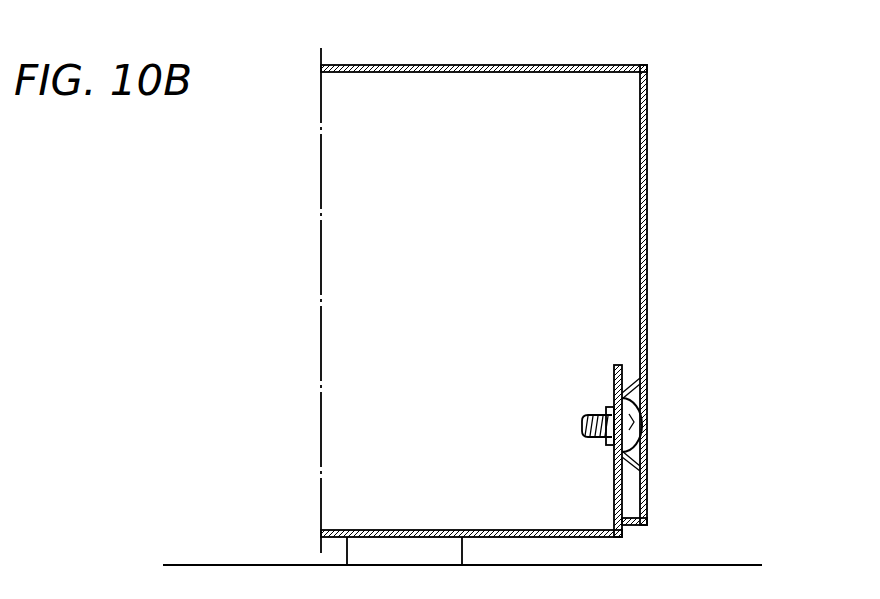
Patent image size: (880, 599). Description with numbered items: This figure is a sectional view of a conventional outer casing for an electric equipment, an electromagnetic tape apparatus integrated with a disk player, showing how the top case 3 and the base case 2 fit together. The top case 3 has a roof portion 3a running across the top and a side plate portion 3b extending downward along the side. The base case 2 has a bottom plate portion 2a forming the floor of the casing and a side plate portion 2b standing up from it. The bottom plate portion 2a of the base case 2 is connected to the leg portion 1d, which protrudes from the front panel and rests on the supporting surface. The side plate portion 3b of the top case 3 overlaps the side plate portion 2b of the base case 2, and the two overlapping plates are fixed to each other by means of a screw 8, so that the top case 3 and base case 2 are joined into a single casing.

The top case 3 is at (541, 275).
The roof portion 3a is at (437, 65).
The side plate portion 3b is at (647, 182).
The base case 2 is at (526, 461).
The bottom plate portion 2a is at (510, 530).
The side plate portion 2b is at (613, 368).
The leg portion 1d is at (398, 543).
The screw 8 is at (642, 427).